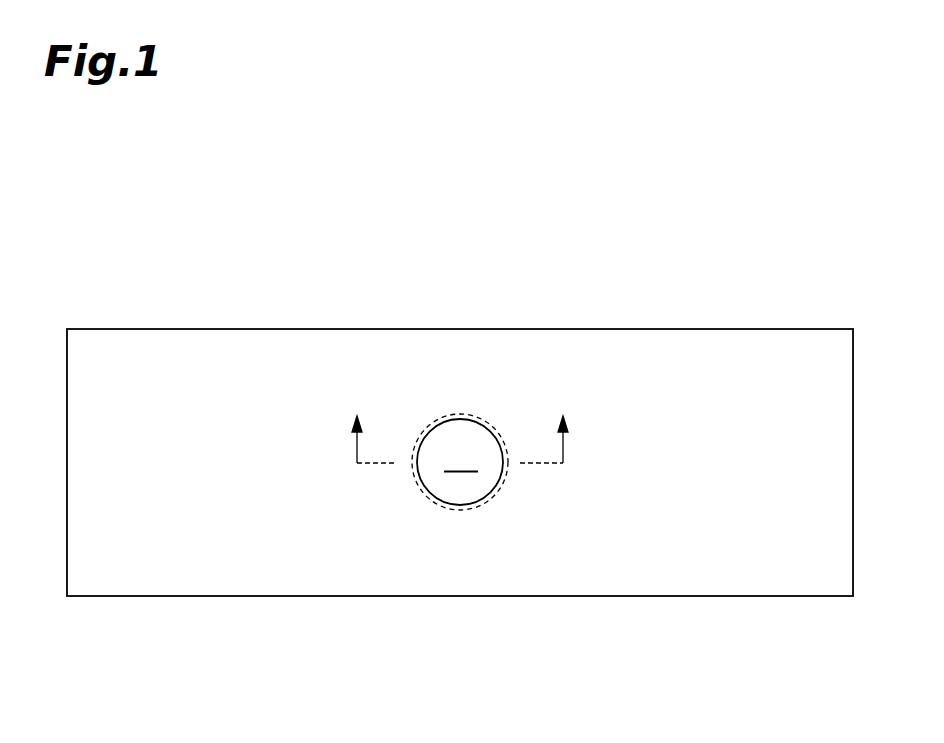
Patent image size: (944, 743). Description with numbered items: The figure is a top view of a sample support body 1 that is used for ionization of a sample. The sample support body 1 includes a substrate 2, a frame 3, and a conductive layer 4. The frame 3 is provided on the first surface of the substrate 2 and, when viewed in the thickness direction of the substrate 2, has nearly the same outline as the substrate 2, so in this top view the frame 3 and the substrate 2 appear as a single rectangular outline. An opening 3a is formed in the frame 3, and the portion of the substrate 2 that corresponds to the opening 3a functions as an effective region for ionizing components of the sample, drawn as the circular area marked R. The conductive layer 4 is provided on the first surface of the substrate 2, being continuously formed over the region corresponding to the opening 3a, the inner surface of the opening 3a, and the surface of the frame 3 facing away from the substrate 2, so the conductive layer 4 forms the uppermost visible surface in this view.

The sample support body 1 is at (460, 422).
The substrate 2 is at (460, 470).
The frame 3 is at (460, 457).
The opening 3a is at (427, 477).
The conductive layer 4 is at (231, 343).